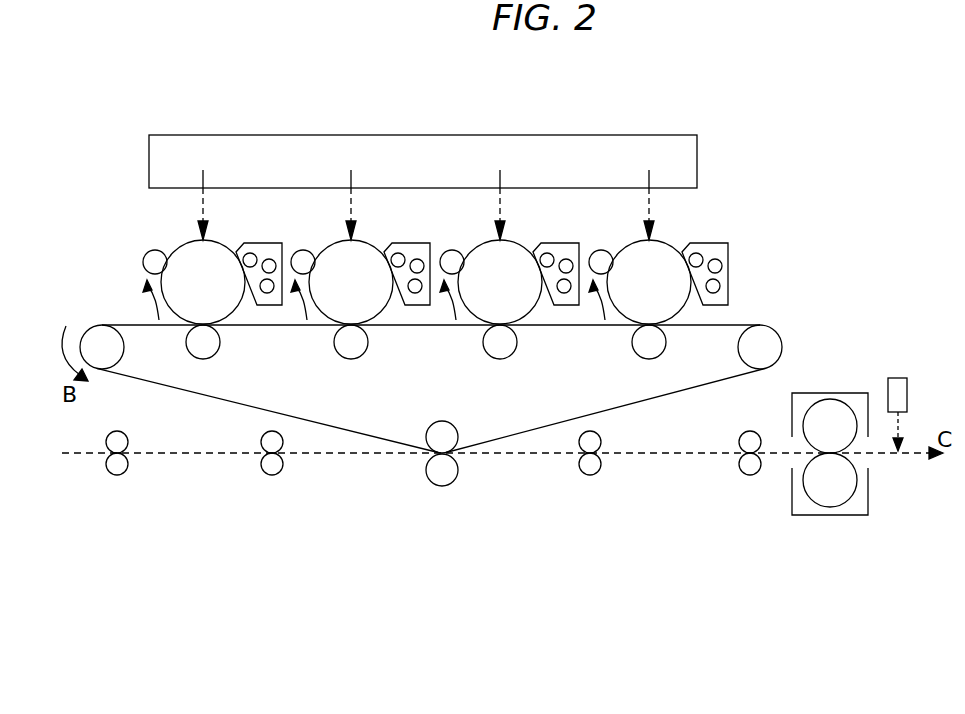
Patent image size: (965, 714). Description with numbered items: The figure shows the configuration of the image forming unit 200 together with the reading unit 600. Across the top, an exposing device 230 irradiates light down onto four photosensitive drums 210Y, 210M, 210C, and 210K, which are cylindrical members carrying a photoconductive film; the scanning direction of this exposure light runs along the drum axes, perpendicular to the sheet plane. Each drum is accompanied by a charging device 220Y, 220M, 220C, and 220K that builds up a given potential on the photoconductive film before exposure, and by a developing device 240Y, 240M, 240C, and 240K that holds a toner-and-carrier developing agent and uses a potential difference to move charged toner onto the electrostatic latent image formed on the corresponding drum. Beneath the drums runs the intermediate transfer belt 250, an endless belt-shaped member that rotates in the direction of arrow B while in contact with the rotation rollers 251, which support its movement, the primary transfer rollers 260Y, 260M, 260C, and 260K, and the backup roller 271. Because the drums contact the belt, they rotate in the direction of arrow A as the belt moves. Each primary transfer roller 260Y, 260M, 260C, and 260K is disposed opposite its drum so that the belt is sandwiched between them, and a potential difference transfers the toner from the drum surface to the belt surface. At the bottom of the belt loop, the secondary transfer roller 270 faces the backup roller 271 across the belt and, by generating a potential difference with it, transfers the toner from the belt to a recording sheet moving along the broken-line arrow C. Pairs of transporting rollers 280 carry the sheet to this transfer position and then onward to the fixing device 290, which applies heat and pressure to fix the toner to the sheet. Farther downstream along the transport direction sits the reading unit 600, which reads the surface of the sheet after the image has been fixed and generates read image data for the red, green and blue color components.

The image forming unit 200 is at (798, 195).
The exposing device 230 is at (698, 160).
The photosensitive drum 210K is at (174, 294).
The photosensitive drum 210C is at (322, 294).
The photosensitive drum 210M is at (469, 294).
The photosensitive drum 210Y is at (621, 294).
The charging device 220K is at (146, 249).
The charging device 220C is at (294, 249).
The charging device 220M is at (443, 249).
The charging device 220Y is at (600, 250).
The developing device 240K is at (262, 243).
The developing device 240C is at (410, 243).
The developing device 240M is at (559, 243).
The developing device 240Y is at (717, 243).
The intermediate transfer belt 250 is at (732, 325).
The rotation rollers 251 is at (98, 362).
The primary transfer roller 260K is at (217, 350).
The primary transfer roller 260C is at (365, 350).
The primary transfer roller 260M is at (514, 350).
The primary transfer roller 260Y is at (648, 358).
The secondary transfer roller 270 is at (443, 486).
The backup roller 271 is at (440, 421).
The transporting rollers 280 is at (118, 476).
The fixing device 290 is at (827, 392).
The reading unit 600 is at (904, 359).